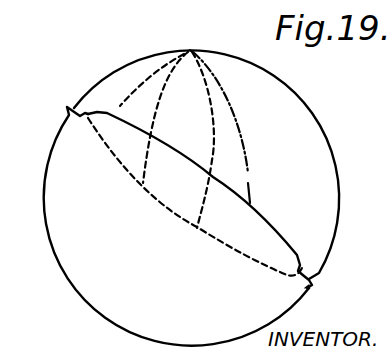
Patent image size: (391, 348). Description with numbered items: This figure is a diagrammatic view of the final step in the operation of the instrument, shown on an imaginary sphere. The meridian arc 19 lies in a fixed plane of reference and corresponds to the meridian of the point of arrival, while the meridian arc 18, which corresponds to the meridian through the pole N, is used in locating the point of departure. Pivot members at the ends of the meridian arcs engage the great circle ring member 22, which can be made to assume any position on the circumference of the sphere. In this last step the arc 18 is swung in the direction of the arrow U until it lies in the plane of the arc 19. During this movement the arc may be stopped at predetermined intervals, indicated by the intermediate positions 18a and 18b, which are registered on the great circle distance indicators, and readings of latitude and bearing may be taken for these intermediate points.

The meridian arc 18 is at (153, 53).
The intermediate position of meridian arc 18a is at (268, 139).
The intermediate position of meridian arc 18b is at (119, 106).
The meridian arc 19 is at (63, 253).
The great circle ring member 22 is at (233, 193).
The arrow indicating direction of swing U is at (238, 168).
The pole of meridian N is at (192, 35).